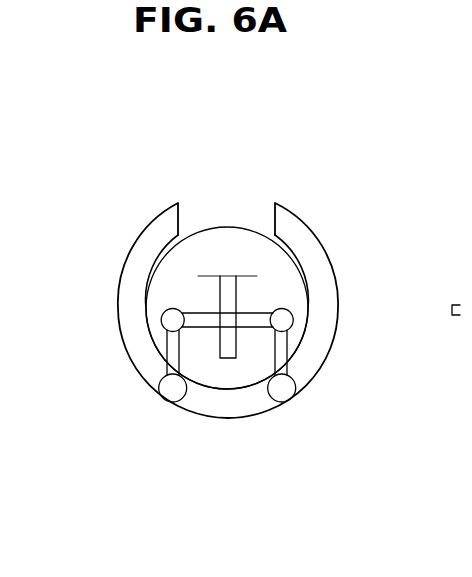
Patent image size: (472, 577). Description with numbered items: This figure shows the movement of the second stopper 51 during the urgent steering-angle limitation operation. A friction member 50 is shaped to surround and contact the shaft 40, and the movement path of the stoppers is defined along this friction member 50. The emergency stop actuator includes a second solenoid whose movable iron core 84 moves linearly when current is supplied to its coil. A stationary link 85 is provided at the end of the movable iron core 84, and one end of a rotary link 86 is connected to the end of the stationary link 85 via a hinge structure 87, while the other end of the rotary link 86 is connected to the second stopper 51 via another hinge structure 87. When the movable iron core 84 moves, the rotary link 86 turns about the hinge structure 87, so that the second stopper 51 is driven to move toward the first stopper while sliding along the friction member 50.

The friction member 50 is at (145, 237).
The shaft 40 is at (272, 275).
The movable iron core 84 is at (224, 281).
The stationary link 85 is at (200, 318).
The hinge structure 87 is at (172, 320).
The rotary link 86 is at (172, 348).
The second stopper 51 is at (173, 400).